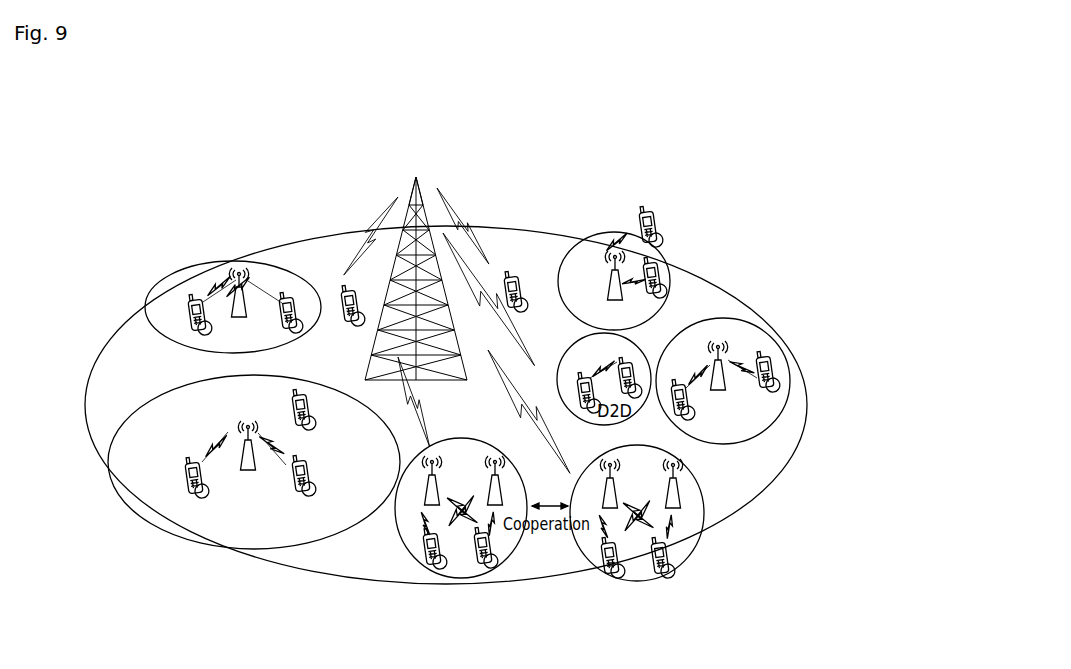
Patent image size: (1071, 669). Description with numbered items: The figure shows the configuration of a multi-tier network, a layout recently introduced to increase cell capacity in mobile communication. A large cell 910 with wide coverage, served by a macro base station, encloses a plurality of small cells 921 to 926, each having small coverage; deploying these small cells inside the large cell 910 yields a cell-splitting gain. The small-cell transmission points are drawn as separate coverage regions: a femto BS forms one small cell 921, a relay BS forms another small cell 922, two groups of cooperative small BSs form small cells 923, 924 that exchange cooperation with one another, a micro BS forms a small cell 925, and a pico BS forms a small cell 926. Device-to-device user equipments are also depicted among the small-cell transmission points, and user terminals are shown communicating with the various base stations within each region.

The large cell 910 is at (505, 242).
The small cell 921 is at (580, 275).
The small cell 922 is at (723, 333).
The small cell 923 is at (638, 570).
The small cell 924 is at (462, 568).
The small cell 925 is at (230, 540).
The small cell 926 is at (192, 275).